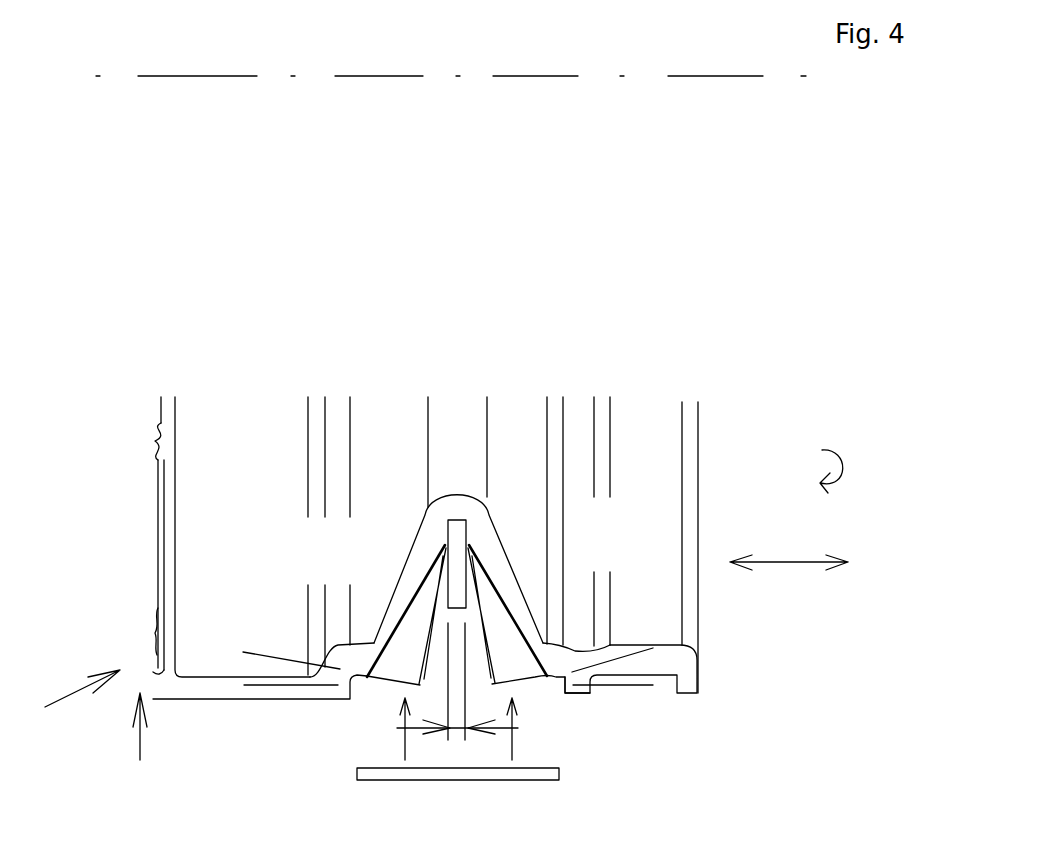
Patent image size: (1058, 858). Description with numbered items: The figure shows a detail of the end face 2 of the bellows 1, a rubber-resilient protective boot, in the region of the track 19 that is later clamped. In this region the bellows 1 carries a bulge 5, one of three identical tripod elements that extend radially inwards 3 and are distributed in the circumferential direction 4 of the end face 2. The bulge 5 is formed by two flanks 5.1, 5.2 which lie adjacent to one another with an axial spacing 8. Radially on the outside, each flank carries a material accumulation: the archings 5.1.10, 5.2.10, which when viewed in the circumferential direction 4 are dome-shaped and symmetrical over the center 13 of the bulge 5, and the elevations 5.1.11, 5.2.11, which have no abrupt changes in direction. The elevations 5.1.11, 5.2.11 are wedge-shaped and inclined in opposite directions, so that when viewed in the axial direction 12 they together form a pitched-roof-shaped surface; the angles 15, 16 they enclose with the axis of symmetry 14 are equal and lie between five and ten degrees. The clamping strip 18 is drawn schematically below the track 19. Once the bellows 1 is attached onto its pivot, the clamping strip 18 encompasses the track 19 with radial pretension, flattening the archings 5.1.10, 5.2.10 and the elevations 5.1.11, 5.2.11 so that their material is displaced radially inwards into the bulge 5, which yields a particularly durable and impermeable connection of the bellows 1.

The bellows 1 is at (238, 428).
The end face 2 is at (77, 693).
The radially inwards direction 3 is at (137, 747).
The circumferential direction 4 is at (838, 462).
The bulge 5 is at (465, 464).
The flank 5.1 is at (360, 464).
The flank 5.2 is at (561, 463).
The arching 5.1.10 is at (361, 604).
The elevation 5.1.11 is at (402, 683).
The arching 5.2.10 is at (562, 591).
The elevation 5.2.11 is at (510, 682).
The axial spacing 8 is at (447, 729).
The axial direction 12 is at (787, 562).
The center 13 is at (457, 678).
The axis of symmetry 14 is at (510, 76).
The angle 15 is at (265, 643).
The angle 16 is at (623, 647).
The clamping strip 18 is at (370, 781).
The track 19 is at (555, 683).